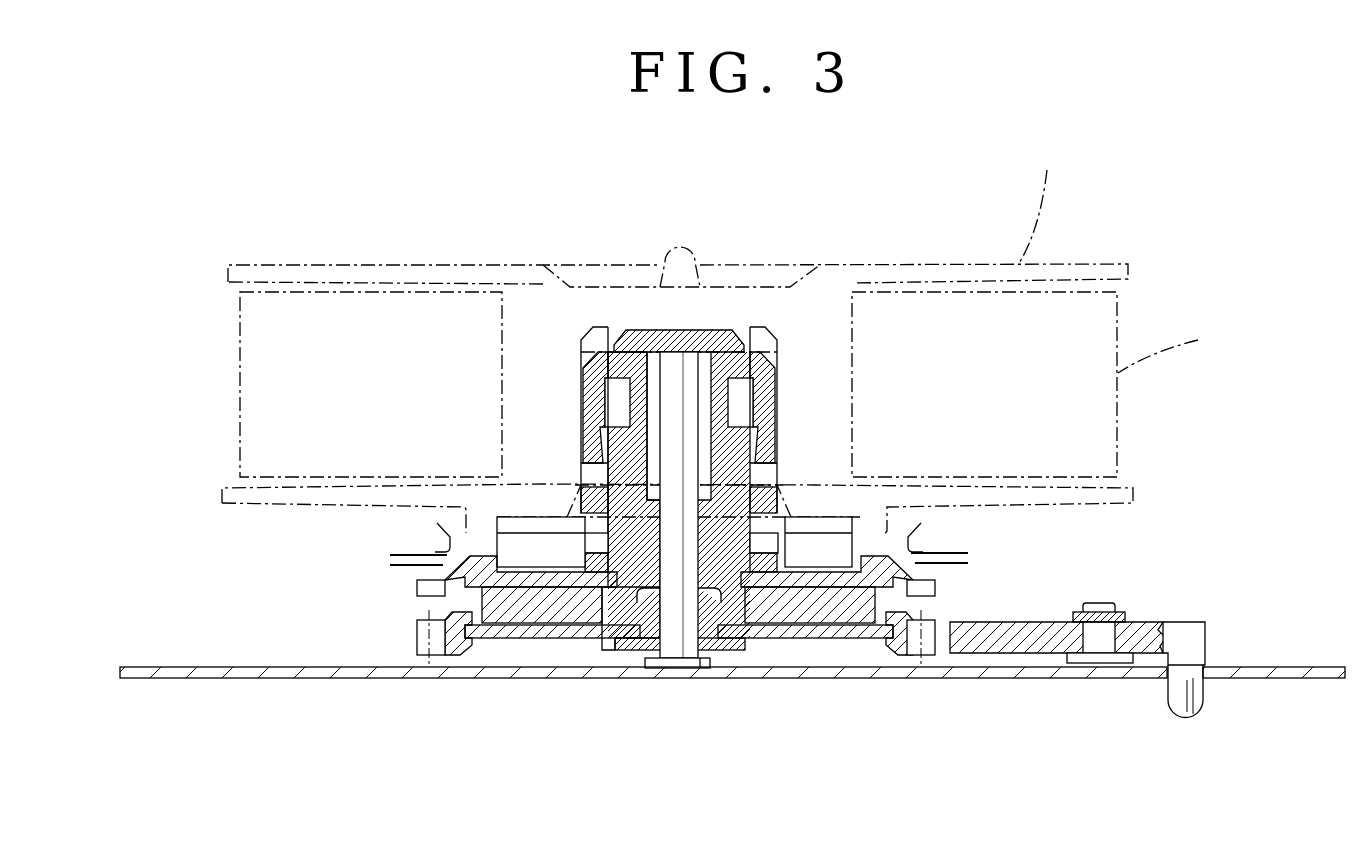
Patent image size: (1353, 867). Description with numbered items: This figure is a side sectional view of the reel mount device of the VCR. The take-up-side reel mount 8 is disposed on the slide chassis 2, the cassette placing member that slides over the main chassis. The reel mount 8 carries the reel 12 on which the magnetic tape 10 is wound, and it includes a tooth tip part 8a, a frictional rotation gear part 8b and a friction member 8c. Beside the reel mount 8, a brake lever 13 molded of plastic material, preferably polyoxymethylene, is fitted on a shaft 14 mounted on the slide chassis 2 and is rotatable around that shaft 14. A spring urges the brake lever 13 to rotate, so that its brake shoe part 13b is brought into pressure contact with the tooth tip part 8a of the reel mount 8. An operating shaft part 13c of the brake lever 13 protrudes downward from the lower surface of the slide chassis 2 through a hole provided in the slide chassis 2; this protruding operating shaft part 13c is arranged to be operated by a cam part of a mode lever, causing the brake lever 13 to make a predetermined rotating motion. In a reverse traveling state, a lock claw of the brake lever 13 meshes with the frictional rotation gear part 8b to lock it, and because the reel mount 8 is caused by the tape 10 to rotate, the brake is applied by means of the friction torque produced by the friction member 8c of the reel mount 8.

The slide chassis 2 is at (1298, 667).
The take-up-side reel mount 8 is at (656, 670).
The tooth tip part 8a is at (938, 640).
The frictional rotation gear part 8b is at (436, 640).
The friction member 8c is at (524, 608).
The magnetic tape 10 is at (737, 384).
The reel 12 is at (678, 212).
The brake lever 13 is at (1086, 673).
The brake shoe part 13b is at (948, 633).
The operating shaft part 13c is at (1178, 722).
The shaft 14 is at (1095, 643).